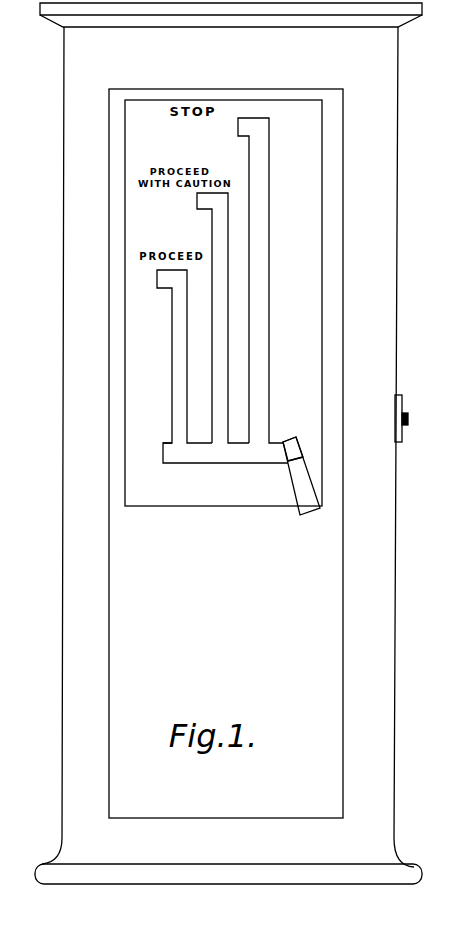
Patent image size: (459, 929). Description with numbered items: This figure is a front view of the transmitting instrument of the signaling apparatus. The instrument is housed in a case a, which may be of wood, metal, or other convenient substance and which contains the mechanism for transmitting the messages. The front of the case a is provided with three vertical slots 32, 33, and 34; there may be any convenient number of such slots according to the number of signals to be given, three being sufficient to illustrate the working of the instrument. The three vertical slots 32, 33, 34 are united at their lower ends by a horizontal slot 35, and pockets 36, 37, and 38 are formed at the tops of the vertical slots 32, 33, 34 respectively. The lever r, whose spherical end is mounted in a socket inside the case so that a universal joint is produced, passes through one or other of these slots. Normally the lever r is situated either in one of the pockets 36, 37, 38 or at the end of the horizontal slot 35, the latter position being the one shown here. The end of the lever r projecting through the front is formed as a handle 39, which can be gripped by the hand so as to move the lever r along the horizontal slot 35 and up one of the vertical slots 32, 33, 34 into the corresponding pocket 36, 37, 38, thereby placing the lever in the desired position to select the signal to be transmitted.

The case a is at (128, 873).
The vertical slot 32 is at (175, 353).
The vertical slot 33 is at (218, 233).
The vertical slot 34 is at (270, 211).
The horizontal slot 35 is at (243, 457).
The pocket 36 is at (170, 283).
The pocket 37 is at (210, 206).
The pocket 38 is at (248, 137).
The handle 39 is at (303, 500).
The lever r is at (297, 434).